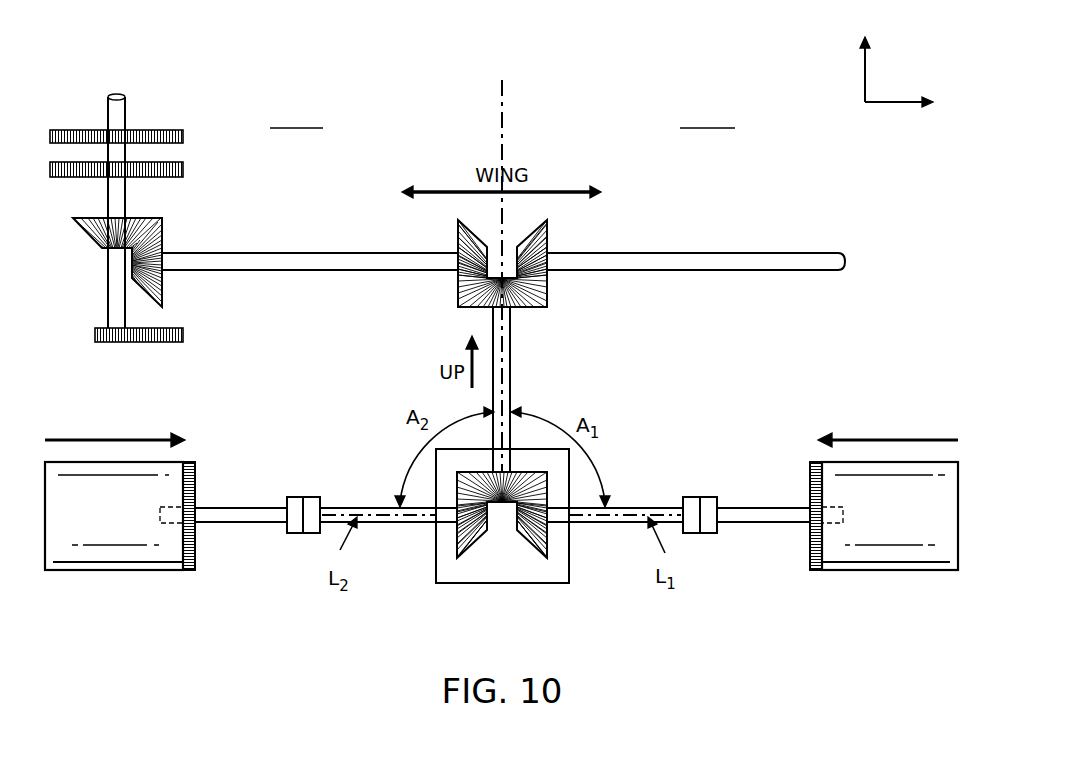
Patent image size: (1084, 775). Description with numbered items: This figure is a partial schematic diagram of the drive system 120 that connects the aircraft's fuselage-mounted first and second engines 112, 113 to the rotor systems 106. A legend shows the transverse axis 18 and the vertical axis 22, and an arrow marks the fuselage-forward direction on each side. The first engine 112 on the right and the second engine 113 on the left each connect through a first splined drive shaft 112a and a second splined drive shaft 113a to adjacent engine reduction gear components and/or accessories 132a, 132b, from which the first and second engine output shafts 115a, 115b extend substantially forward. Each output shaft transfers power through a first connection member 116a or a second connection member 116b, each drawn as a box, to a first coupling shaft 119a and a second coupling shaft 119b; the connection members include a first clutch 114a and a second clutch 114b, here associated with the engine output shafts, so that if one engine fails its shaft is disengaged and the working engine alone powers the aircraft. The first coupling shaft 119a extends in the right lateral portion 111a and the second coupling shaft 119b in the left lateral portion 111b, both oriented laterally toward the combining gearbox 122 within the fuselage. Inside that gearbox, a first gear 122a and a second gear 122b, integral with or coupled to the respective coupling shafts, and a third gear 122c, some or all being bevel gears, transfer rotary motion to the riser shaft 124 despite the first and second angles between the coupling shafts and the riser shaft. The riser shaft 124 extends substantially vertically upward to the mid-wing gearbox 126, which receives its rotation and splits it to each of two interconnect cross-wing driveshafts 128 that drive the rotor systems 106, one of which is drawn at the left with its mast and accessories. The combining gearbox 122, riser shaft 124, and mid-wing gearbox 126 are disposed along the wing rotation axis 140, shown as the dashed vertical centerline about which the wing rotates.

The rotor system 106 is at (168, 97).
The drive system 120 is at (612, 90).
The wing rotation axis 140 is at (500, 92).
The vertical axis Z 22 is at (865, 78).
The transverse axis Y 18 is at (890, 102).
The left lateral portion 111b is at (296, 114).
The right lateral portion 111a is at (707, 114).
The interconnect cross-wing driveshaft 128 is at (708, 227).
The mid-wing gearbox 126 is at (547, 233).
The riser shaft 124 is at (510, 356).
The combining gearbox 122 is at (570, 572).
The first gear 122a is at (473, 548).
The second gear 122b is at (532, 473).
The third gear 122c is at (528, 548).
The second engine output shaft 115b is at (243, 508).
The second connection member 116b is at (313, 497).
The second clutch 114b is at (293, 534).
The second coupling shaft 119b is at (372, 508).
The first coupling shaft 119a is at (632, 508).
The first connection member 116a is at (697, 497).
The first clutch 114a is at (708, 534).
The first engine output shaft 115a is at (763, 508).
The second engine 113 is at (93, 570).
The second splined drive shaft 113a is at (160, 508).
The engine reduction gear components and/or accessories 132b is at (188, 570).
The first engine 112 is at (912, 570).
The first splined drive shaft 112a is at (843, 510).
The engine reduction gear components and/or accessories 132a is at (813, 570).